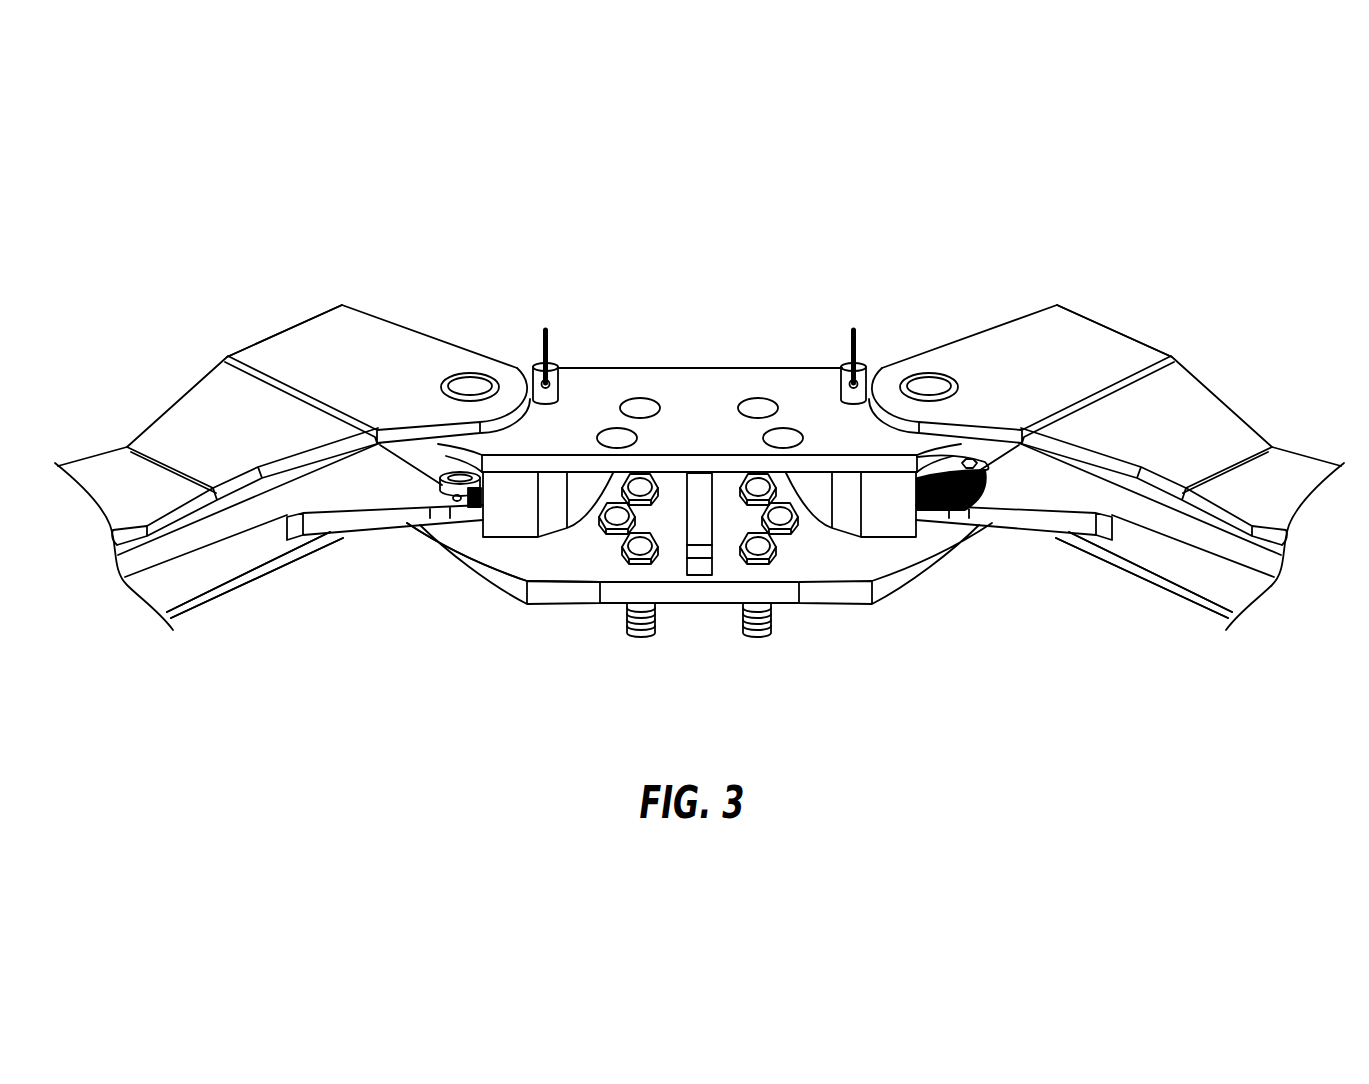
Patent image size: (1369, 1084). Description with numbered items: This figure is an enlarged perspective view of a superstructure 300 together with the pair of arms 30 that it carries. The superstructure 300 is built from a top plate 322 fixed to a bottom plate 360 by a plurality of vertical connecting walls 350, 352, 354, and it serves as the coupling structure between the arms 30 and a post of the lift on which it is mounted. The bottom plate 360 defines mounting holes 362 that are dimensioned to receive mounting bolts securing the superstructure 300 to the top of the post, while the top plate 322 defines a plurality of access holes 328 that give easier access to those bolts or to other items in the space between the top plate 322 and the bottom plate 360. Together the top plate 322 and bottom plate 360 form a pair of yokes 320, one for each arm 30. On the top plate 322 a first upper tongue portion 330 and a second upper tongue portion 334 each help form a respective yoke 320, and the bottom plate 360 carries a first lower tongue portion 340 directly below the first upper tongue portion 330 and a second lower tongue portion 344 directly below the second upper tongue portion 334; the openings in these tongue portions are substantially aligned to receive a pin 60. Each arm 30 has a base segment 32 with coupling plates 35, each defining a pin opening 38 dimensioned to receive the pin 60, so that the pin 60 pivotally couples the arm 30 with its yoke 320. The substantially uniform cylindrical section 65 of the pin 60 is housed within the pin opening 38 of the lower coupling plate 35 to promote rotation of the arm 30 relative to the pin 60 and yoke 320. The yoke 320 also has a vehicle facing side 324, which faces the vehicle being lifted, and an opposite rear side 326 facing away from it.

The superstructure 300 is at (800, 232).
The arm 30 is at (178, 358).
The base segment 32 is at (228, 565).
The coupling plates 35 is at (362, 493).
The pin opening 38 is at (433, 380).
The pin 60 is at (468, 385).
The uniform cylindrical section 65 is at (480, 487).
The yoke 320 is at (699, 564).
The top plate 322 is at (589, 380).
The vehicle facing side 324 is at (712, 640).
The rear side 326 is at (700, 346).
The access holes 328 is at (643, 442).
The first upper tongue portion 330 is at (943, 443).
The second upper tongue portion 334 is at (453, 430).
The first lower tongue portion 340 is at (937, 525).
The second lower tongue portion 344 is at (457, 525).
The connecting wall 350 is at (513, 530).
The connecting wall 352 is at (887, 520).
The connecting wall 354 is at (700, 563).
The bottom plate 360 is at (568, 592).
The mounting holes 362 is at (805, 518).